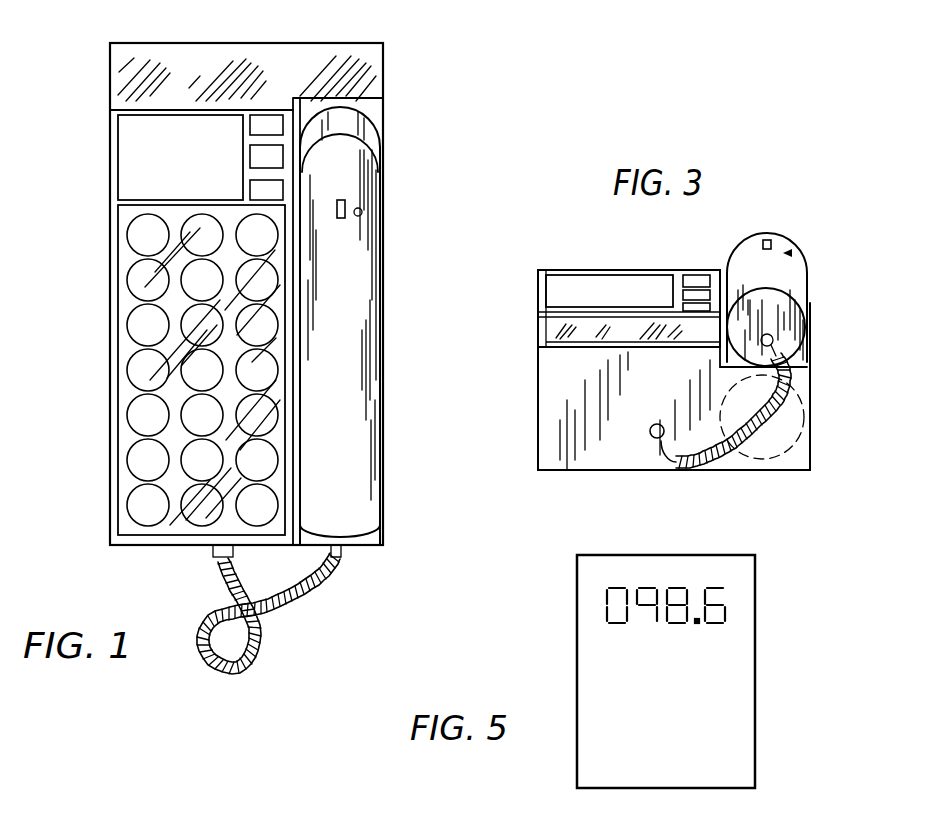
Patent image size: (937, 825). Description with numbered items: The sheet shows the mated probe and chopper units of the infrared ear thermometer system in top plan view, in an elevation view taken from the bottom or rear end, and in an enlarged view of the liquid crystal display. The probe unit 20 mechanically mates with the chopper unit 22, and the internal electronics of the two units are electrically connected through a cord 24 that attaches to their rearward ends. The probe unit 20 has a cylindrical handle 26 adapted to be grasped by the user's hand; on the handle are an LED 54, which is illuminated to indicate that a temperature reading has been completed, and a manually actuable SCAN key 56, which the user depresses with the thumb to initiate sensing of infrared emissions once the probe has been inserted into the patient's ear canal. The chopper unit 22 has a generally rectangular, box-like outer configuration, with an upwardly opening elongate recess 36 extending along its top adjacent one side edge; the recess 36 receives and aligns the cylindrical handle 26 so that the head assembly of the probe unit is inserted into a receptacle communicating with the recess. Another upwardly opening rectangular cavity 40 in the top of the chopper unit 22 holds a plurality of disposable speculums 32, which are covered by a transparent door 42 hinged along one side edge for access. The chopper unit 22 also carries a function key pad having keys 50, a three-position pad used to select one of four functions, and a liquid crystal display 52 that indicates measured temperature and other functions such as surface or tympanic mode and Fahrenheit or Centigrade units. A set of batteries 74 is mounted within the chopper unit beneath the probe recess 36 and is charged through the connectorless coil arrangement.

In FIG. 1, the probe unit 20 is at (370, 128).
In FIG. 3, the probe unit 20 is at (742, 229).
In FIG. 1, the chopper unit 22 is at (104, 251).
In FIG. 3, the chopper unit 22 is at (532, 430).
In FIG. 1, the cord 24 is at (292, 598).
In FIG. 3, the cord 24 is at (712, 468).
In FIG. 1, the cylindrical handle 26 is at (365, 330).
In FIG. 3, the cylindrical handle 26 is at (805, 284).
In FIG. 1, the disposable plastic speculum 32 is at (128, 480).
In FIG. 1, the elongate recess 36 is at (310, 105).
In FIG. 3, the elongate recess 36 is at (805, 352).
In FIG. 1, the rectangular cavity 40 is at (172, 534).
In FIG. 3, the transparent door 42 is at (548, 330).
In FIG. 1, the keys 50 is at (272, 190).
In FIG. 3, the keys 50 is at (702, 277).
In FIG. 1, the liquid crystal display 52 is at (120, 162).
In FIG. 3, the liquid crystal display 52 is at (600, 282).
In FIG. 5, the liquid crystal display 52 is at (752, 566).
In FIG. 1, the LED 54 is at (363, 212).
In FIG. 3, the LED 54 is at (790, 254).
In FIG. 1, the SCAN key 56 is at (348, 203).
In FIG. 3, the SCAN key 56 is at (770, 236).
In FIG. 3, the batteries 74 is at (805, 435).